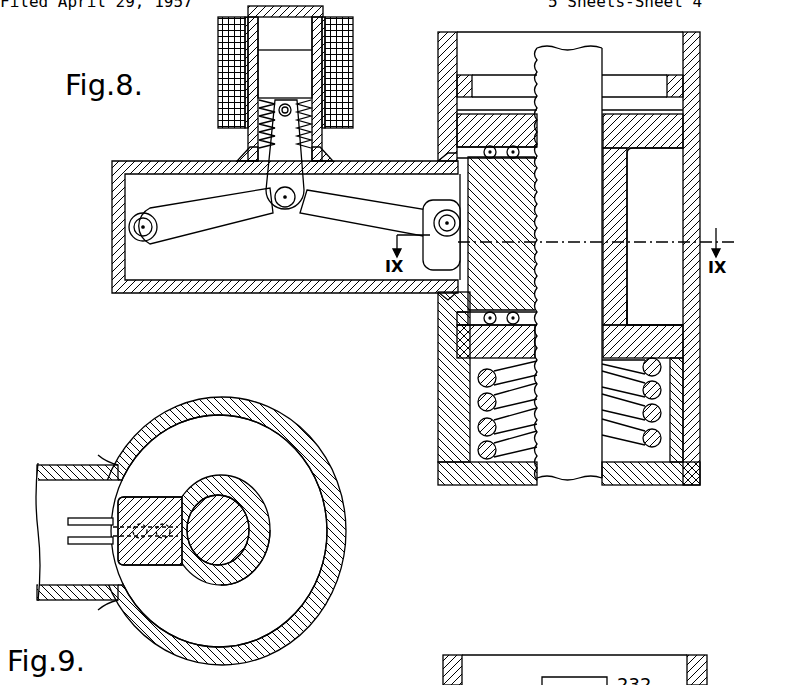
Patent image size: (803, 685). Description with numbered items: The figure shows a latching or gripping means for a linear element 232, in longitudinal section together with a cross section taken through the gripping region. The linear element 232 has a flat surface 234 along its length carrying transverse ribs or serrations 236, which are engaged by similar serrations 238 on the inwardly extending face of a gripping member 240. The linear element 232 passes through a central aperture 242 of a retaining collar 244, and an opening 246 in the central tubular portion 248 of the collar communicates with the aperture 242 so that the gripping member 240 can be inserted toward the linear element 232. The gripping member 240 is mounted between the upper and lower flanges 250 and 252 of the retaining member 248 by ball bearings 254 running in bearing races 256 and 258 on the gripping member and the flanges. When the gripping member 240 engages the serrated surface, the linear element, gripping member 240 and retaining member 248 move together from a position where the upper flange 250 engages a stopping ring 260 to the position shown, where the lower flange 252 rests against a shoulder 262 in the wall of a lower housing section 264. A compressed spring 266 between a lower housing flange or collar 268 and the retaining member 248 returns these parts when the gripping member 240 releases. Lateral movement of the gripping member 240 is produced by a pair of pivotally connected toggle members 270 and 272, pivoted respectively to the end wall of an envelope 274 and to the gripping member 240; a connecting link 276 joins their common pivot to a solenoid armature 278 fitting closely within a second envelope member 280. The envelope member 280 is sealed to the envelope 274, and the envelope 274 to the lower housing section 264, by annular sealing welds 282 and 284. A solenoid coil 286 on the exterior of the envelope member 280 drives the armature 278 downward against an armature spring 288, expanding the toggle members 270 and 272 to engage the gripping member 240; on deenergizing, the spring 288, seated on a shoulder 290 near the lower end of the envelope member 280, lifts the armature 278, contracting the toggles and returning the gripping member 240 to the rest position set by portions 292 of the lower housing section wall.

In FIG. 8, the linear element 232 is at (582, 90).
In FIG. 9, the linear element 232 is at (237, 513).
In FIG. 9, the flat surface 234 is at (167, 565).
In FIG. 8, the transverse ribs or serrations 236 is at (538, 131).
In FIG. 8, the serrations 238 is at (538, 222).
In FIG. 8, the gripping member 240 is at (507, 195).
In FIG. 9, the gripping member 240 is at (145, 507).
In FIG. 8, the central aperture 242 is at (630, 266).
In FIG. 9, the central aperture 242 is at (245, 547).
In FIG. 8, the retaining collar 244 is at (627, 176).
In FIG. 9, the retaining collar 244 is at (230, 487).
In FIG. 8, the opening 246 is at (537, 153).
In FIG. 9, the opening 246 is at (167, 504).
In FIG. 8, the central tubular portion 248 is at (618, 211).
In FIG. 8, the upper flange 250 is at (468, 128).
In FIG. 8, the lower flange 252 is at (470, 357).
In FIG. 8, the ball bearings 254 is at (520, 312).
In FIG. 8, the bearing race 256 is at (458, 320).
In FIG. 8, the bearing race 258 is at (472, 342).
In FIG. 8, the stopping ring 260 is at (688, 80).
In FIG. 8, the shoulder 262 is at (678, 367).
In FIG. 8, the lower housing section 264 is at (690, 206).
In FIG. 9, the lower housing section 264 is at (327, 478).
In FIG. 8, the compressed spring 266 is at (653, 413).
In FIG. 8, the lower housing flange or collar 268 is at (635, 476).
In FIG. 8, the toggle member 270 is at (242, 216).
In FIG. 8, the toggle member 272 is at (348, 212).
In FIG. 8, the envelope 274 is at (228, 284).
In FIG. 9, the envelope 274 is at (58, 466).
In FIG. 8, the connecting link 276 is at (282, 152).
In FIG. 8, the solenoid armature 278 is at (282, 63).
In FIG. 8, the second envelope member 280 is at (323, 14).
In FIG. 8, the annular sealing weld 282 is at (333, 156).
In FIG. 8, the annular sealing weld 284 is at (444, 157).
In FIG. 8, the solenoid coil 286 is at (353, 23).
In FIG. 8, the armature spring 288 is at (263, 110).
In FIG. 8, the shoulder 290 is at (327, 147).
In FIG. 8, the portions of the lower housing section wall 292 is at (462, 177).